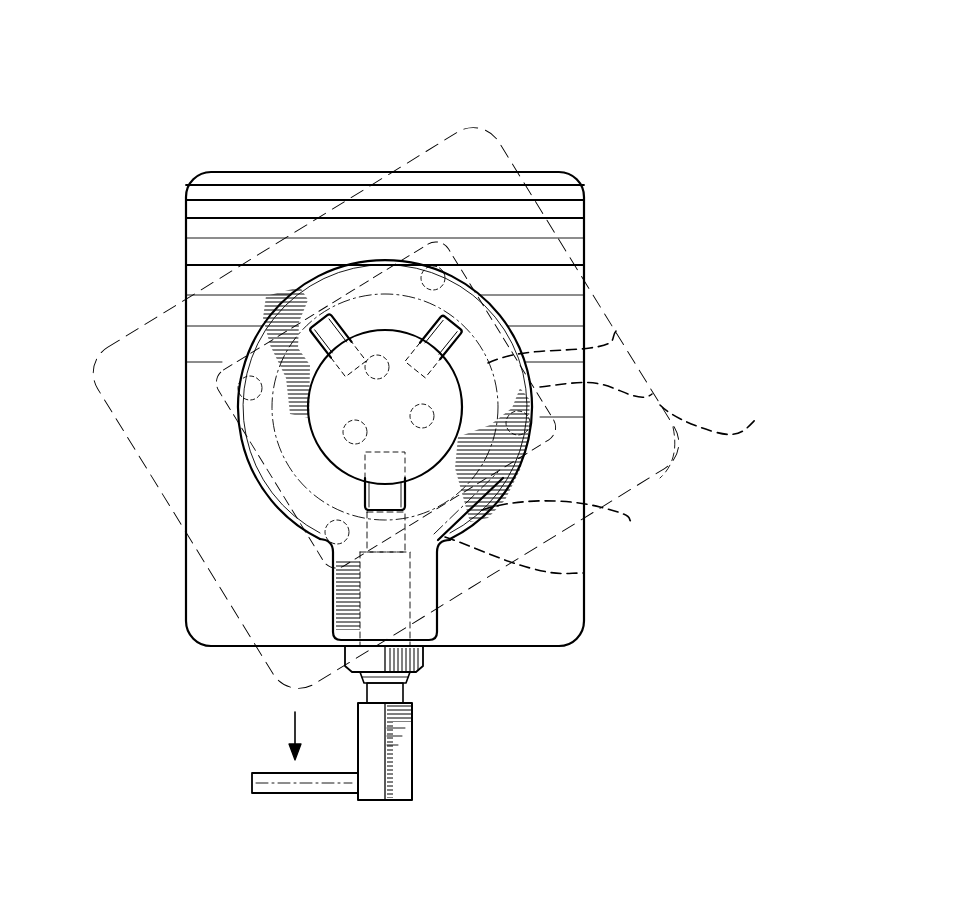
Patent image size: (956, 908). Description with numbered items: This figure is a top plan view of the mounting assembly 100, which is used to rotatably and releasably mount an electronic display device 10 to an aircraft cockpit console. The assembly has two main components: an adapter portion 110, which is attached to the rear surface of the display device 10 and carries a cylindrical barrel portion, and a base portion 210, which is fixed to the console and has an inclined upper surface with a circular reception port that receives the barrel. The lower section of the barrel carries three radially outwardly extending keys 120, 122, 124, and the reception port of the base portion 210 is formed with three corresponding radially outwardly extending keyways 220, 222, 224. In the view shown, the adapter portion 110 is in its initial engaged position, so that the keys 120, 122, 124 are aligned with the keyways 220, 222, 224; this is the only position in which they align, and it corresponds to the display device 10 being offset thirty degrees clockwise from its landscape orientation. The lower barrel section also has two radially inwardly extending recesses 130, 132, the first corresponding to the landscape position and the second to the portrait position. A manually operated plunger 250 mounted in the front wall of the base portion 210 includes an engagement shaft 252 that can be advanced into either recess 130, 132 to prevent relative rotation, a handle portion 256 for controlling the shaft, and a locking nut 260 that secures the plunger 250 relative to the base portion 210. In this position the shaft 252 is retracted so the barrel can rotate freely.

The electronic display device 10 is at (717, 436).
The mounting assembly 100 is at (528, 90).
The adapter portion 110 is at (652, 394).
The key 120 is at (318, 336).
The key 122 is at (380, 503).
The key 124 is at (447, 330).
The first radially inwardly extending recess 130 is at (615, 332).
The second radially inwardly extending recess 132 is at (632, 522).
The base portion 210 is at (585, 613).
The keyway 220 is at (306, 345).
The keyway 222 is at (366, 496).
The keyway 224 is at (424, 320).
The plunger 250 is at (415, 747).
The engagement shaft 252 is at (584, 573).
The handle portion 256 is at (280, 794).
The locking nut 260 is at (423, 660).